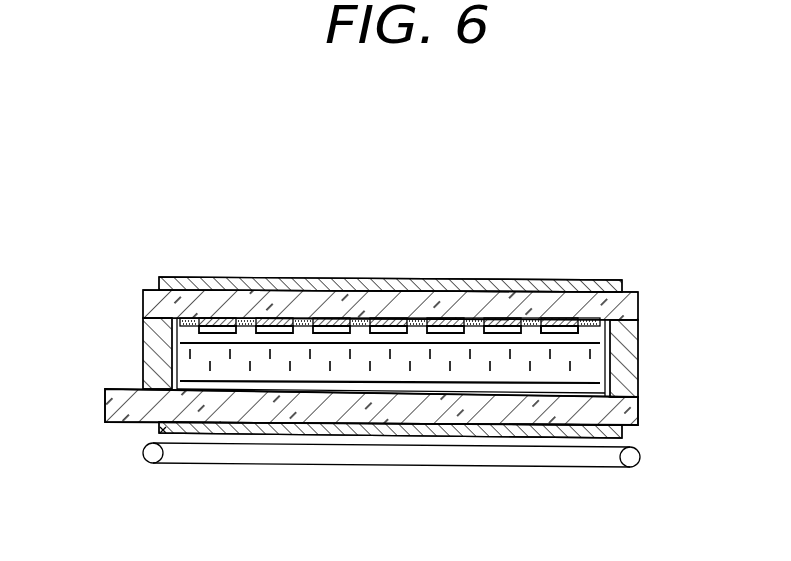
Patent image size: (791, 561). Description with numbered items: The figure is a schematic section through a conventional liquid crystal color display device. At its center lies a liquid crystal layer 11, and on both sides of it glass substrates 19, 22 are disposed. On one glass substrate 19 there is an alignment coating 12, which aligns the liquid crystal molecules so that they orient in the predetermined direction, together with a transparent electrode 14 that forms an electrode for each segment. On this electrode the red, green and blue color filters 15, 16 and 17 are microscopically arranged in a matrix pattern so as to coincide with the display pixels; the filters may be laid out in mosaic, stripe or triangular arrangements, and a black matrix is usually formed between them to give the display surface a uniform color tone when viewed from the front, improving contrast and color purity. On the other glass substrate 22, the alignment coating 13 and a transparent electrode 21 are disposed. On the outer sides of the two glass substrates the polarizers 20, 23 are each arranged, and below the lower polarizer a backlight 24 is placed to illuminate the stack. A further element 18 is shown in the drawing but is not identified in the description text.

The liquid crystal layer 11 is at (180, 353).
The alignment coating 12 is at (598, 341).
The alignment coating 13 is at (600, 383).
The transparent electrode 14 is at (562, 335).
The color filter 15 is at (250, 322).
The color filter 16 is at (333, 323).
The color filter 17 is at (387, 327).
The spacer 18 is at (592, 320).
The glass substrate 19 is at (147, 302).
The polarizer 20 is at (182, 284).
The transparent electrode 21 is at (108, 388).
The glass substrate 22 is at (638, 423).
The polarizer 23 is at (163, 430).
The backlight 24 is at (632, 458).